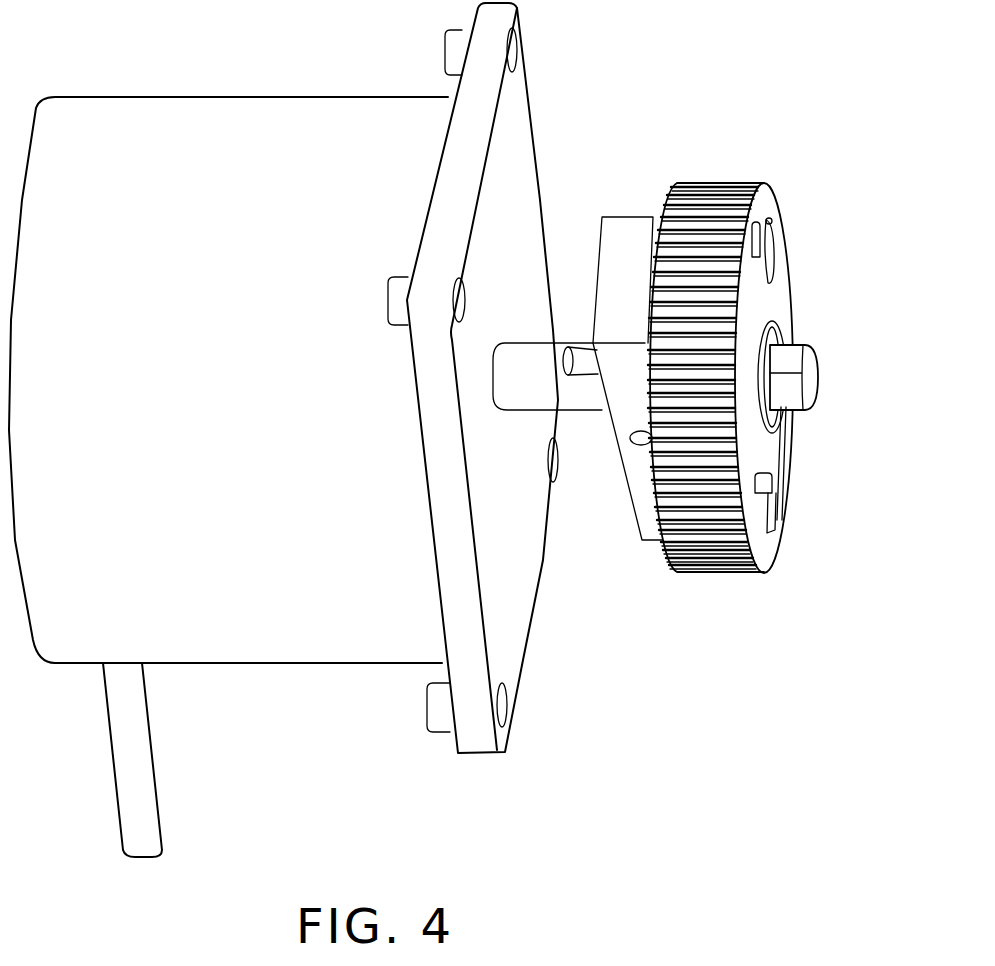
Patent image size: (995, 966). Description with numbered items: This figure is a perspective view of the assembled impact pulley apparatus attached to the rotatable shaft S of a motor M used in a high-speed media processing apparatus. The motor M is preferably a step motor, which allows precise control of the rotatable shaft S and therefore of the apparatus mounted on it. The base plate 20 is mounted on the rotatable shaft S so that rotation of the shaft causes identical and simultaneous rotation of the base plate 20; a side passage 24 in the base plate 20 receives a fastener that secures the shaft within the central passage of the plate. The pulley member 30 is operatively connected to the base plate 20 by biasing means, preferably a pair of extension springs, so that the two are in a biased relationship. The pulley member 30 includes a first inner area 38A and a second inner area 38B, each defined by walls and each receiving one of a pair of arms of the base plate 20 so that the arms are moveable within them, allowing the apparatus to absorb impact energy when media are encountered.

The motor M is at (270, 395).
The base plate 20 is at (638, 290).
The side passage 24 is at (645, 448).
The pulley member 30 is at (748, 427).
The first inner area 38A is at (757, 300).
The second inner area 38B is at (773, 470).
The rotatable shaft S is at (797, 404).